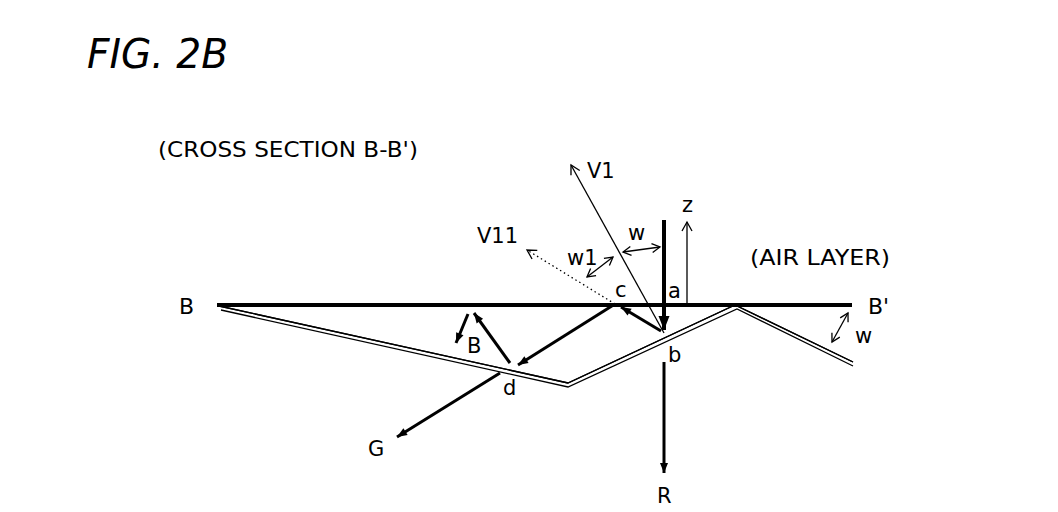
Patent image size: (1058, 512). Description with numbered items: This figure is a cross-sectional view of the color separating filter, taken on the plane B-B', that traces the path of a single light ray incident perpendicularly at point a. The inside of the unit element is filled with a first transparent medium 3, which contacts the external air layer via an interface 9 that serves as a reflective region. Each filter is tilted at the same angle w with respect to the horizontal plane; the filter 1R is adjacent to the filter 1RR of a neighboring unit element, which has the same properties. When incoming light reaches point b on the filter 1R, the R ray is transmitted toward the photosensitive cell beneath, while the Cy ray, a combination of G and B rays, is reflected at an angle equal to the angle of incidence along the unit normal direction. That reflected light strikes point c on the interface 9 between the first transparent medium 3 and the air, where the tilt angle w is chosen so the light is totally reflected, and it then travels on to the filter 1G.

The first transparent medium 3 is at (337, 323).
The interface 9 is at (412, 303).
The filter 1G is at (333, 333).
The filter 1R is at (613, 365).
The filter 1RR is at (797, 338).